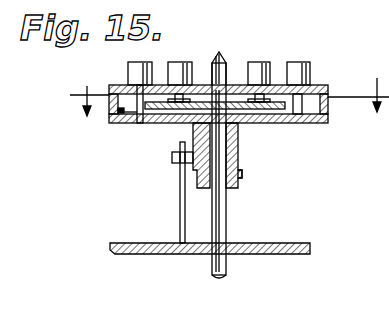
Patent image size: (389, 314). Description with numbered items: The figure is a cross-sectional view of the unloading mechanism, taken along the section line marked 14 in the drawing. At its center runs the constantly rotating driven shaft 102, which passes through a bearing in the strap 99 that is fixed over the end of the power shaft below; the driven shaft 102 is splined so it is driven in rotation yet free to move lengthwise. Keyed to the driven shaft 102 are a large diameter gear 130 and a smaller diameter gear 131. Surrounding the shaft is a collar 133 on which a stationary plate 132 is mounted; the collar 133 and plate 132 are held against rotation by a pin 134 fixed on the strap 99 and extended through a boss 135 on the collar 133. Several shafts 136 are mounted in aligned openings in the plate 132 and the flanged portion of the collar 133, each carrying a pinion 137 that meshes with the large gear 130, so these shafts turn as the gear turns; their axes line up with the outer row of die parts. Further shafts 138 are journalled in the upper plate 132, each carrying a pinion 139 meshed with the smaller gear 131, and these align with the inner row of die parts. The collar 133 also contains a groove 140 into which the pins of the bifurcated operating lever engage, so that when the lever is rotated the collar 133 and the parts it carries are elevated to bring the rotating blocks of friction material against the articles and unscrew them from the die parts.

The section line 14- 14 is at (226, 111).
The strap 99 is at (240, 255).
The driven shaft 102 is at (225, 205).
The large diameter gear 130 is at (274, 115).
The smaller diameter gear 131 is at (236, 84).
The stationary plate 132 is at (306, 87).
The collar 133 is at (240, 147).
The pin 134 is at (180, 191).
The boss 135 is at (172, 159).
The shafts 136 is at (135, 82).
The pinion 137 is at (118, 123).
The shafts 138 is at (180, 86).
The pinion 139 is at (199, 84).
The groove 140 is at (243, 176).